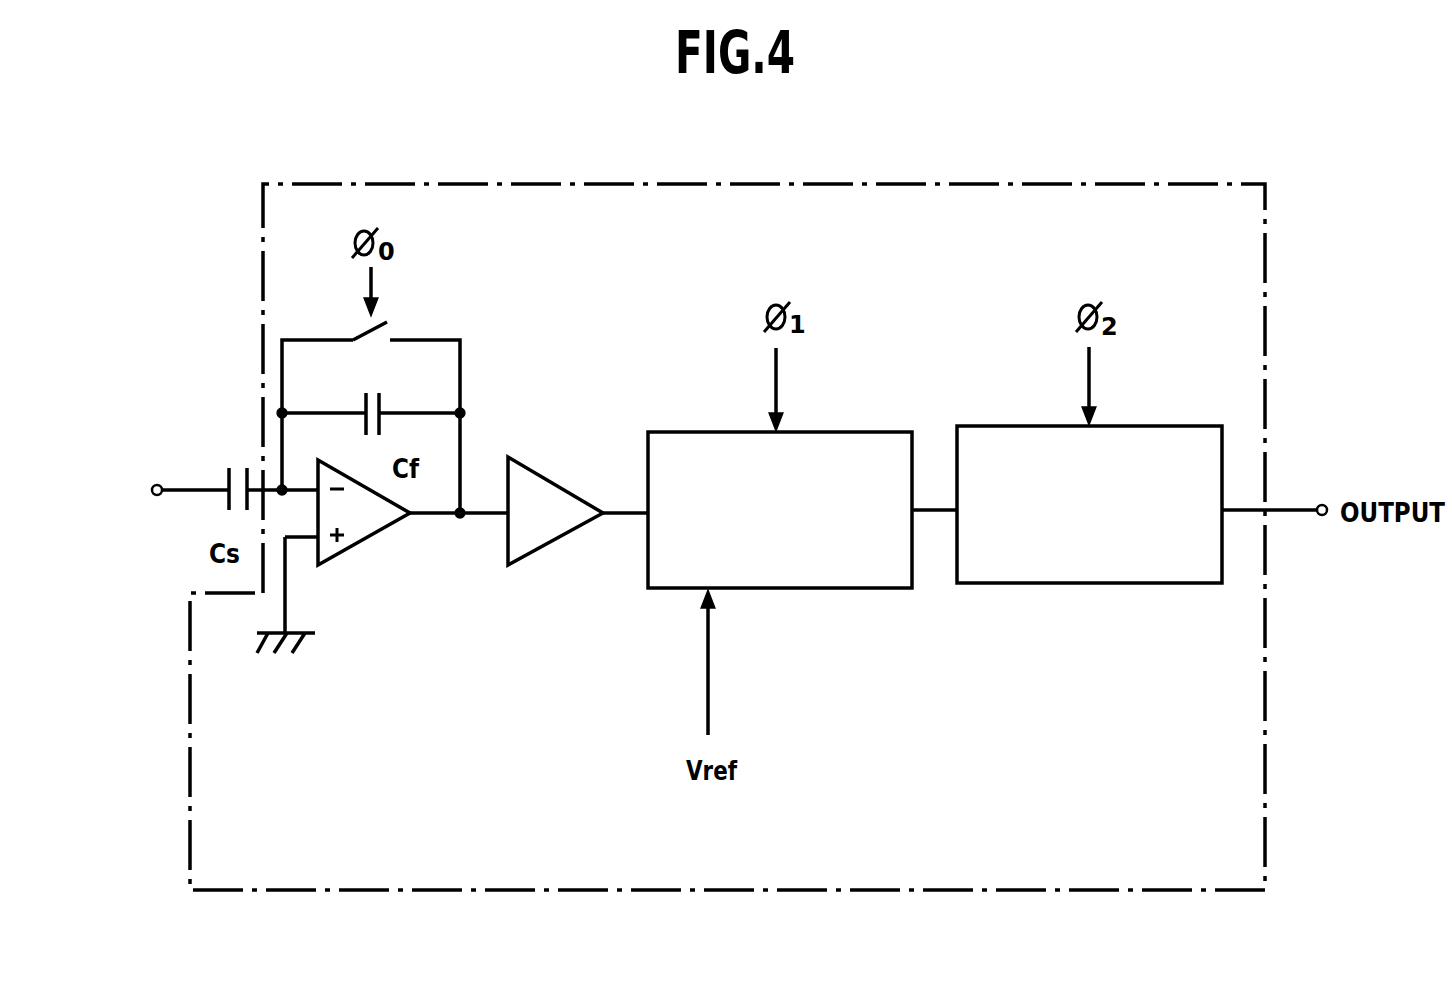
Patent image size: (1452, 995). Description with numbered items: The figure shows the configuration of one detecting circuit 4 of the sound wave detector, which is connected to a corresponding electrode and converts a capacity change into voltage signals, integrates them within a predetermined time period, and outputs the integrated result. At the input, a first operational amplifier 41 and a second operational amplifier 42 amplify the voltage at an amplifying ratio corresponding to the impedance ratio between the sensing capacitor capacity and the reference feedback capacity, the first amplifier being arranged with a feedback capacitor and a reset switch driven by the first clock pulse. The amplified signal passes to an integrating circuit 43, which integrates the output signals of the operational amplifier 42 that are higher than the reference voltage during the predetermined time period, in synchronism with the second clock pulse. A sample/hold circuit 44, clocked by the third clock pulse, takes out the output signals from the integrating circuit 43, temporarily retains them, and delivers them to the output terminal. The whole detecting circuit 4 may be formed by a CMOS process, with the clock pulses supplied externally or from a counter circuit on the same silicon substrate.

The detecting circuit 4 is at (1263, 270).
The operational amplifier 41 is at (358, 542).
The operational amplifier 42 is at (540, 548).
The integrating circuit 43 is at (780, 590).
The sample/hold circuit 44 is at (1020, 585).